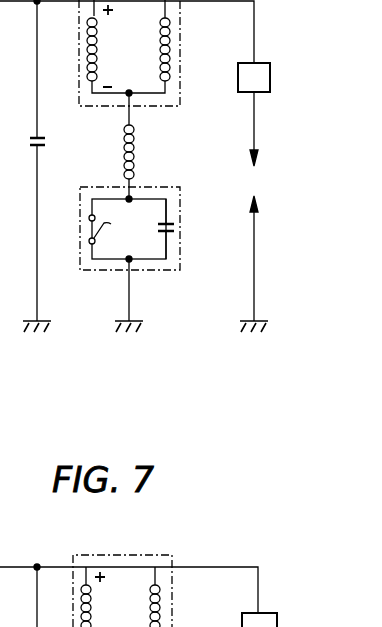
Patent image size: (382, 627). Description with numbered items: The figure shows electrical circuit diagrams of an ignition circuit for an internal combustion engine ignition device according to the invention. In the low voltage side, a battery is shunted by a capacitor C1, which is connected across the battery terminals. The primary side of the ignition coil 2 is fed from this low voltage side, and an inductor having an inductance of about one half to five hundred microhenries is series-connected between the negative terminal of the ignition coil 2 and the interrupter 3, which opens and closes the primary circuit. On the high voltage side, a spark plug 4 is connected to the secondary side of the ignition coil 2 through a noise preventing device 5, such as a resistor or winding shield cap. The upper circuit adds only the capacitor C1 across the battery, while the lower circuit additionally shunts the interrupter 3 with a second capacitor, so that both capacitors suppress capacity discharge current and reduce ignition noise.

In FIG. 7, the ignition coil 2 is at (148, 555).
In FIG. 5, the interrupter 3 is at (167, 271).
In FIG. 5, the spark plug 4 is at (252, 183).
In FIG. 5, the noise preventing device 5 is at (271, 78).
In FIG. 7, the noise preventing device 5 is at (276, 620).
In FIG. 5, the capacitor C1 is at (47, 146).